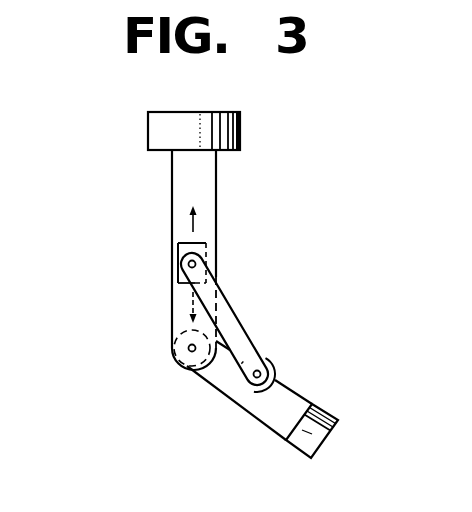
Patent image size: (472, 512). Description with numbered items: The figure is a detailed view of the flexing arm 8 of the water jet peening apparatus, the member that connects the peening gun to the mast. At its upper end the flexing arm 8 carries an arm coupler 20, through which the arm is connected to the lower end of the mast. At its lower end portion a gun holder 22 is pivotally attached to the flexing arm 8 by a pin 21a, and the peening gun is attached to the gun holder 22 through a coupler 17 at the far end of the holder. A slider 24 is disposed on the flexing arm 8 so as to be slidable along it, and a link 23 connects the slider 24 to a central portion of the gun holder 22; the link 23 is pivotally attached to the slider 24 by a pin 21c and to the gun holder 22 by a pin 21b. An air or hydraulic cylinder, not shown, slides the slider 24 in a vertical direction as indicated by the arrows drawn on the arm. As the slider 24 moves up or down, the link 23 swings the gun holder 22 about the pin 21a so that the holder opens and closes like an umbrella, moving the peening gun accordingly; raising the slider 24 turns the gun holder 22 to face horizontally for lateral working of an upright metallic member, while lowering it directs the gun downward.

The arm coupler 20 is at (241, 127).
The flexing arm 8 is at (172, 192).
The slider 24 is at (203, 250).
The pin 21c is at (190, 263).
The link 23 is at (238, 322).
The pin 21a is at (189, 347).
The pin 21b is at (263, 358).
The gun holder 22 is at (223, 391).
The coupler 17 is at (338, 430).